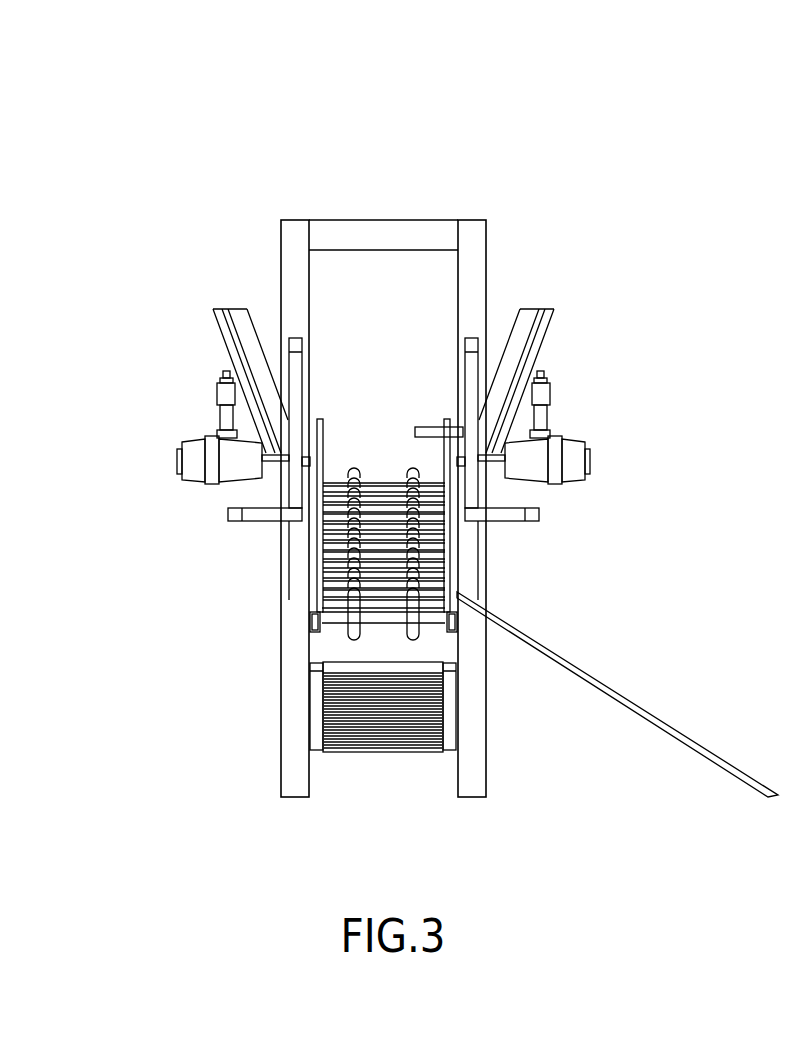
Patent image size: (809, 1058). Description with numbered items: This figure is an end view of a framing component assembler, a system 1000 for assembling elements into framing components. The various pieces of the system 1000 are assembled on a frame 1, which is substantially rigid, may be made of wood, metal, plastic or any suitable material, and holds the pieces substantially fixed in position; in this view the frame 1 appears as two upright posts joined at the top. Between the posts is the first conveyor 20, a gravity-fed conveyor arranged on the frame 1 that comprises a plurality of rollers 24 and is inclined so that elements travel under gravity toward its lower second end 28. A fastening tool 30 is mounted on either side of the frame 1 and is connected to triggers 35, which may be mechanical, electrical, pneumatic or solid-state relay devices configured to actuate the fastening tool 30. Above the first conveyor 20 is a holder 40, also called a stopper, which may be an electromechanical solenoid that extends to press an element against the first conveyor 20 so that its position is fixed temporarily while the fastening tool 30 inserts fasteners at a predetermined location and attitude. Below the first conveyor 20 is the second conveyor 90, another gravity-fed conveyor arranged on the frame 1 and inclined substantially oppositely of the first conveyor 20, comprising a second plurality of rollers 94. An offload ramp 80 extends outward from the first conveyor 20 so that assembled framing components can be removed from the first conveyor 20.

The system 1000 is at (458, 140).
The frame 1 is at (383, 206).
The first conveyor 20 is at (336, 630).
The rollers 24 is at (403, 470).
The second end 28 is at (310, 620).
The fastening tool 30 is at (198, 418).
The triggers 35 is at (222, 372).
The holder 40 is at (420, 427).
The offload ramp 80 is at (692, 740).
The second conveyor 90 is at (340, 760).
The second plurality of rollers 94 is at (384, 752).